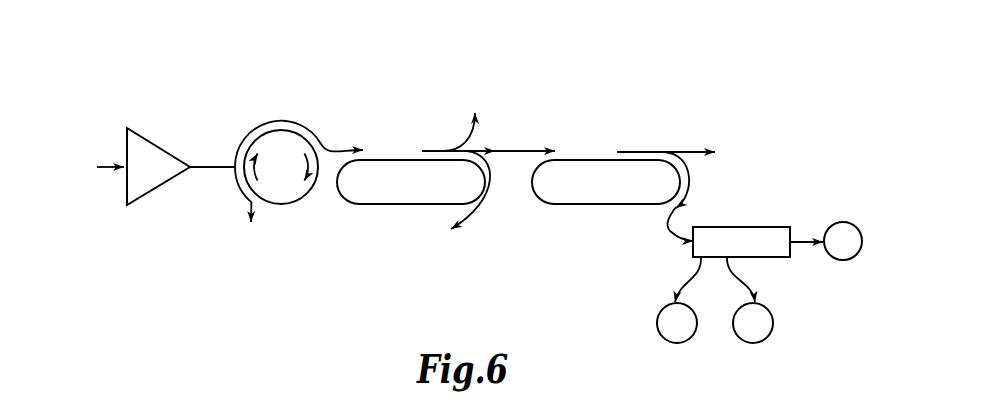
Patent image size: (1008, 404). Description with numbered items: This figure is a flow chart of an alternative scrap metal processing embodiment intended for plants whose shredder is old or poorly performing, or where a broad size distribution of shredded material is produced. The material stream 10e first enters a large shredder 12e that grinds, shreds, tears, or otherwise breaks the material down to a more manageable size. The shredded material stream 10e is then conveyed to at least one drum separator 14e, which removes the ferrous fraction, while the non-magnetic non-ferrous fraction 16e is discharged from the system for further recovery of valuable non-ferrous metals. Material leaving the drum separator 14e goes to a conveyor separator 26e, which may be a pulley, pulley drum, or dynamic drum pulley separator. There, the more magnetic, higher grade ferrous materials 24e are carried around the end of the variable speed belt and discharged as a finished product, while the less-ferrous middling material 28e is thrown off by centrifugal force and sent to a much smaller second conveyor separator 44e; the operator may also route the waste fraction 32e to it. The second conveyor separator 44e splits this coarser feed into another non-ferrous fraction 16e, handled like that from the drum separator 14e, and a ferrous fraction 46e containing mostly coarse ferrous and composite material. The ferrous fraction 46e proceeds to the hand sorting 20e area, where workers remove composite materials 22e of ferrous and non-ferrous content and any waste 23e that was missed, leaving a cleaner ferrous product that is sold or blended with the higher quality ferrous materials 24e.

The material stream 10e is at (325, 108).
The shredder 12e is at (147, 182).
The drum separator 14e is at (282, 195).
The non-ferrous fraction 16e is at (493, 198).
The conveyor separator 26e is at (363, 195).
The less-ferrous middling material 28e is at (530, 150).
The waste fraction 32e is at (466, 118).
The ferrous materials 24e is at (449, 199).
The second conveyor separator 44e is at (567, 195).
The ferrous fraction 46e is at (667, 231).
The hand sorting 20e is at (768, 235).
The waste 23e is at (683, 338).
The composite materials 22e is at (758, 333).